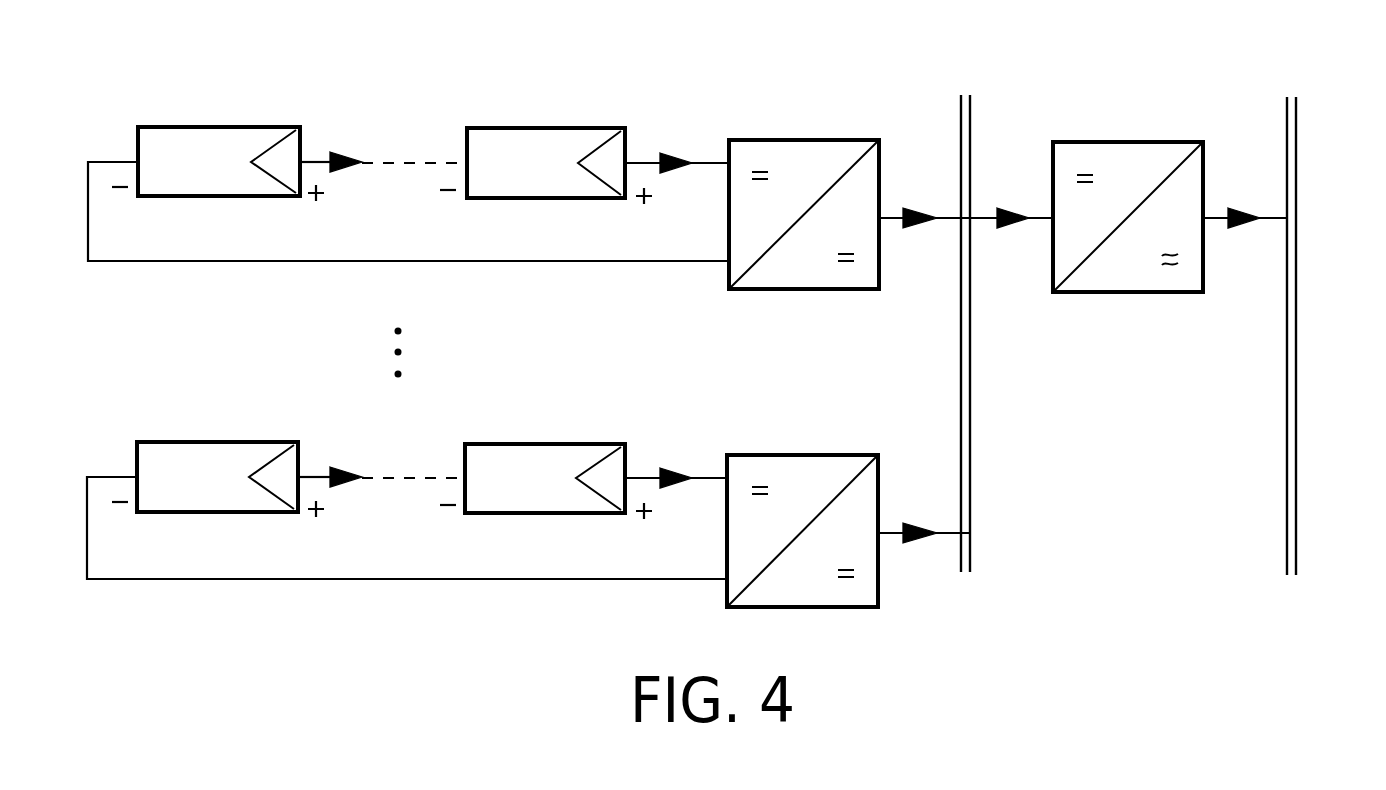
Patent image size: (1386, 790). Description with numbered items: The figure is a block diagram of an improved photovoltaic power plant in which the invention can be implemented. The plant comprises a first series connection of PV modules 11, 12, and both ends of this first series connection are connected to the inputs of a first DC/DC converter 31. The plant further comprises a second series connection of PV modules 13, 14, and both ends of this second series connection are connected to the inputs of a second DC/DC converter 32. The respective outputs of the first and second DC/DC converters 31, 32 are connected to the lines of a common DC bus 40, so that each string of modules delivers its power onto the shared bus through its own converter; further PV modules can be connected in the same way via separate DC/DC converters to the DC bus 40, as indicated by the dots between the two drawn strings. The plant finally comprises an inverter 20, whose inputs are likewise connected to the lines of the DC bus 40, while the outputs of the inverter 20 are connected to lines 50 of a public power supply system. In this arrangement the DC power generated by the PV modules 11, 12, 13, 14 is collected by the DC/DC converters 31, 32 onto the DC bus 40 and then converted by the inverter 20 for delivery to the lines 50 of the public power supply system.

The PV module 11 is at (220, 127).
The PV module 12 is at (547, 128).
The PV module 13 is at (219, 442).
The PV module 14 is at (546, 444).
The first DC/DC converter 31 is at (805, 140).
The second DC/DC converter 32 is at (805, 455).
The inverter 20 is at (1129, 142).
The DC bus 40 is at (970, 425).
The lines of a public power supply system 50 is at (1297, 293).